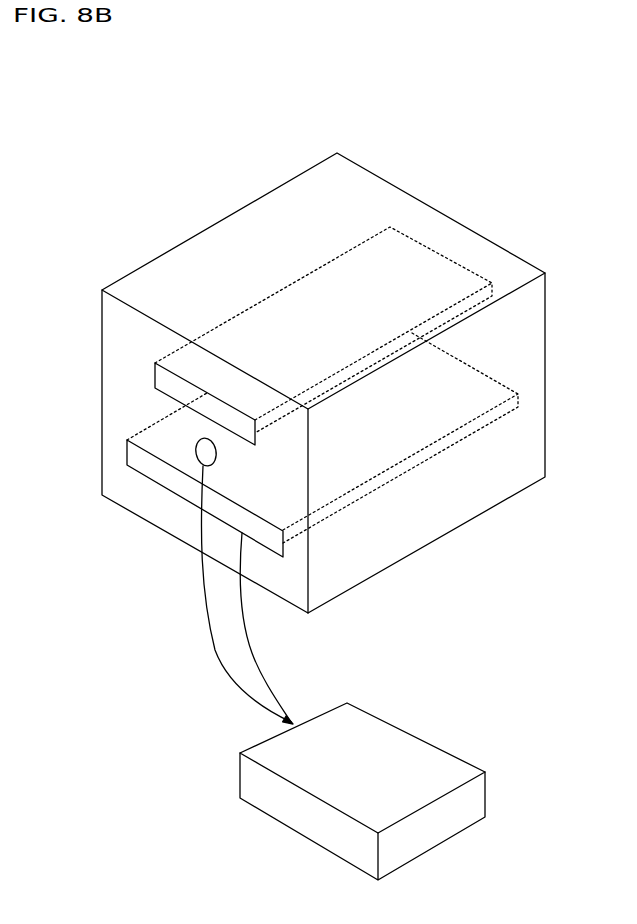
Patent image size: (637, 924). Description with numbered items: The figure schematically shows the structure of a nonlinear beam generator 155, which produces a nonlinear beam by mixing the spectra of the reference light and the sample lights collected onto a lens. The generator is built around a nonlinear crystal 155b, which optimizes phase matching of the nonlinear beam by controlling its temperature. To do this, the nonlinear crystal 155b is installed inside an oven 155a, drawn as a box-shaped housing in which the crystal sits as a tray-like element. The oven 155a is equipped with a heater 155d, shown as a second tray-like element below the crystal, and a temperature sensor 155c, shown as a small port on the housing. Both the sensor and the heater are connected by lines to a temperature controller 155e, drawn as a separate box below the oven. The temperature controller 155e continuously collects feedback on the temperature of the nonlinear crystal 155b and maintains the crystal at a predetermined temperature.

The nonlinear beam generator 155 is at (152, 103).
The oven 155a is at (440, 212).
The nonlinear crystal 155b is at (153, 366).
The temperature sensor 155c is at (196, 438).
The heater 155d is at (126, 442).
The temperature controller 155e is at (415, 735).